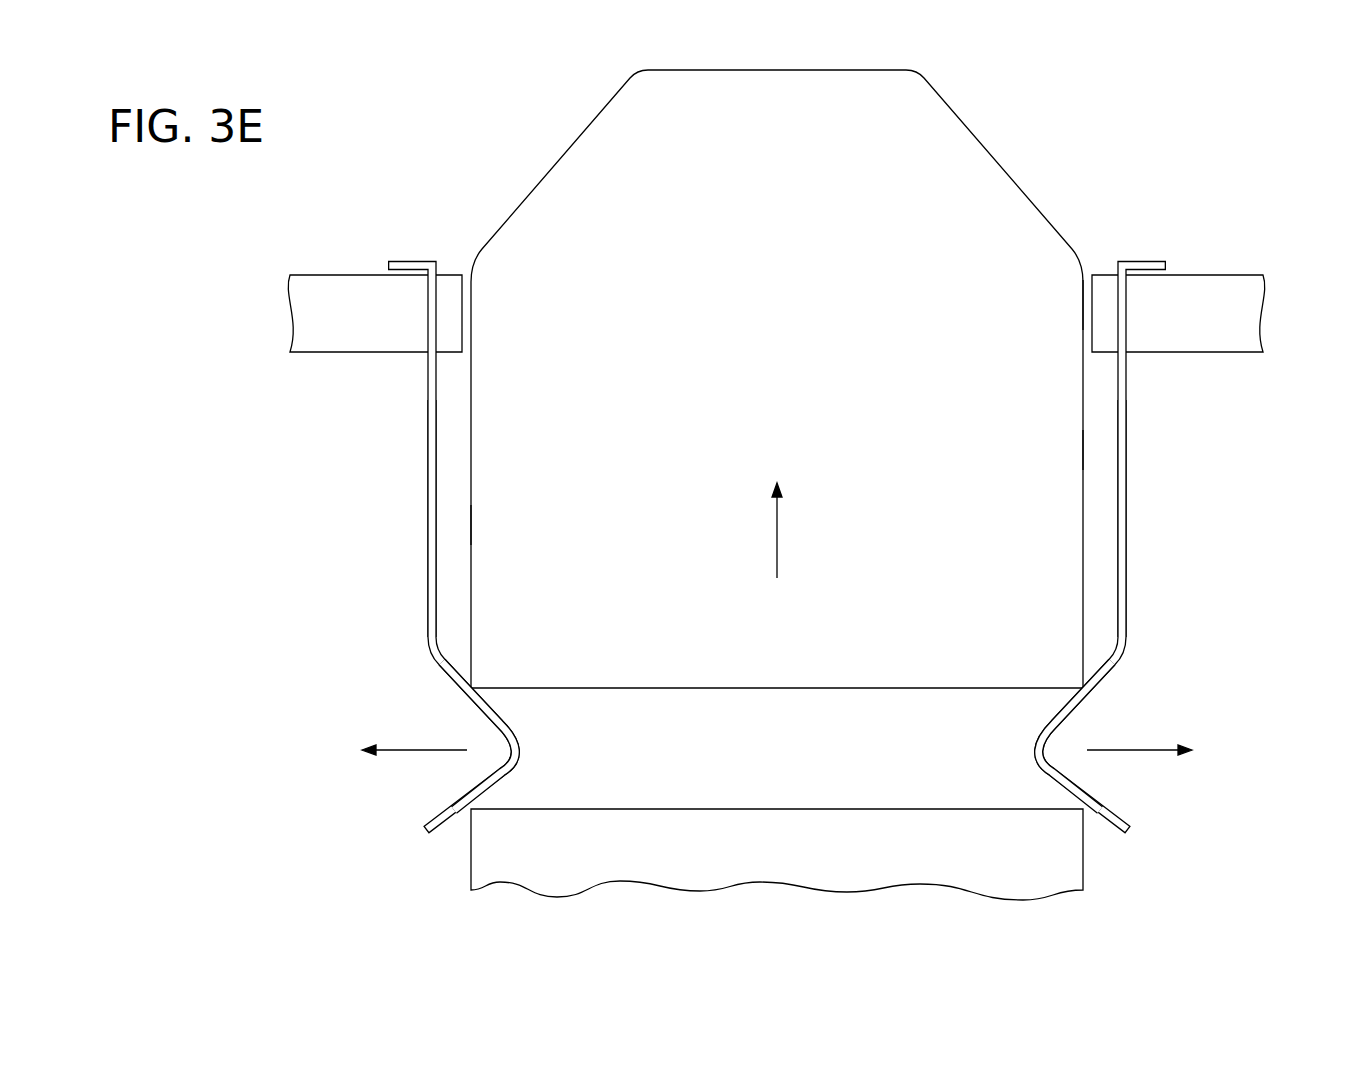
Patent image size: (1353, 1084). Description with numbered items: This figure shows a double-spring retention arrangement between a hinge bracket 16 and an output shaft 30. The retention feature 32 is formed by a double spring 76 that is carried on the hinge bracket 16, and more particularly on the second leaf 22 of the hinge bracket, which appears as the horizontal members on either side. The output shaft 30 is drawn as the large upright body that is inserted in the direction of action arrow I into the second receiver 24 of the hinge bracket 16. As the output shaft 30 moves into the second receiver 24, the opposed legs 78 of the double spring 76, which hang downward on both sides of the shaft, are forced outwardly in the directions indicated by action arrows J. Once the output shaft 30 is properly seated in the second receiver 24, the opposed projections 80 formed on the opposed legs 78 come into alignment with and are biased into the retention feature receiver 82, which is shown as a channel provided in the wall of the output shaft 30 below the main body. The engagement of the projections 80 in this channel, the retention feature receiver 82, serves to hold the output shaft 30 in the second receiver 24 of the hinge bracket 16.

The hinge bracket 16 is at (343, 275).
The second leaf 22 is at (332, 338).
The second receiver 24 is at (1092, 308).
The output shaft 30 is at (893, 177).
The retention feature 32 is at (382, 523).
The double spring 76 is at (1138, 448).
The opposed legs 78 is at (427, 642).
The opposed projections 80 is at (518, 752).
The retention feature receiver 82 is at (766, 784).
The action arrow I is at (777, 540).
The action arrows J is at (420, 750).